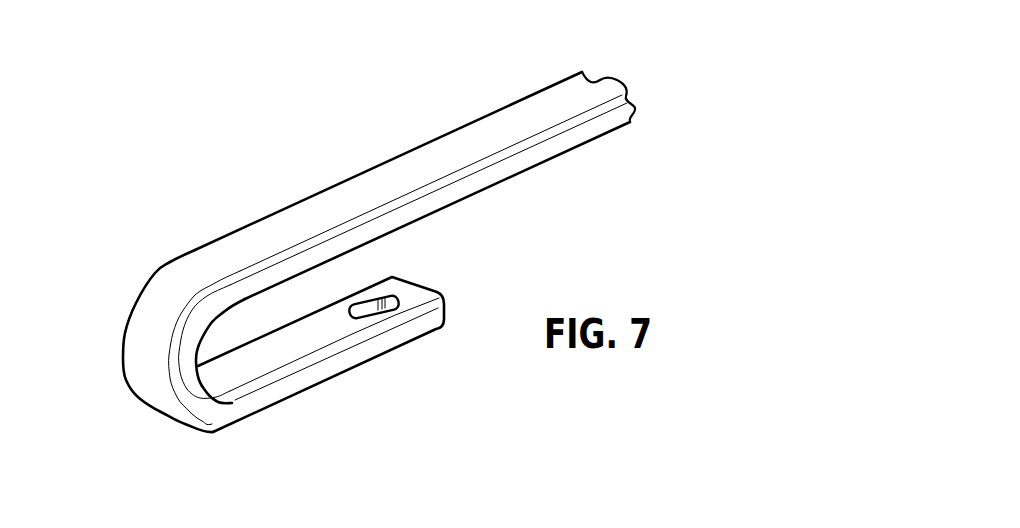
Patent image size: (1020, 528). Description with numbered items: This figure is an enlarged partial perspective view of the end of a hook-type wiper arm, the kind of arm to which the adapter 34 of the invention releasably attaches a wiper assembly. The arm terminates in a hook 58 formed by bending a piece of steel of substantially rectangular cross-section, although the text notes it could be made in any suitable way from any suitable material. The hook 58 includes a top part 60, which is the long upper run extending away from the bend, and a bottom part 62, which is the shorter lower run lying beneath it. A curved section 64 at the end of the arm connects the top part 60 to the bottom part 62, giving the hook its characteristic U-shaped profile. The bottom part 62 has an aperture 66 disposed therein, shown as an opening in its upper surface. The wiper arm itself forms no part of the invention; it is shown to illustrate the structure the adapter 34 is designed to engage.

The adapter 34 is at (187, 172).
The hook 58 is at (592, 145).
The top part 60 is at (383, 175).
The bottom part 62 is at (343, 360).
The curved section 64 is at (148, 366).
The aperture 66 is at (367, 306).